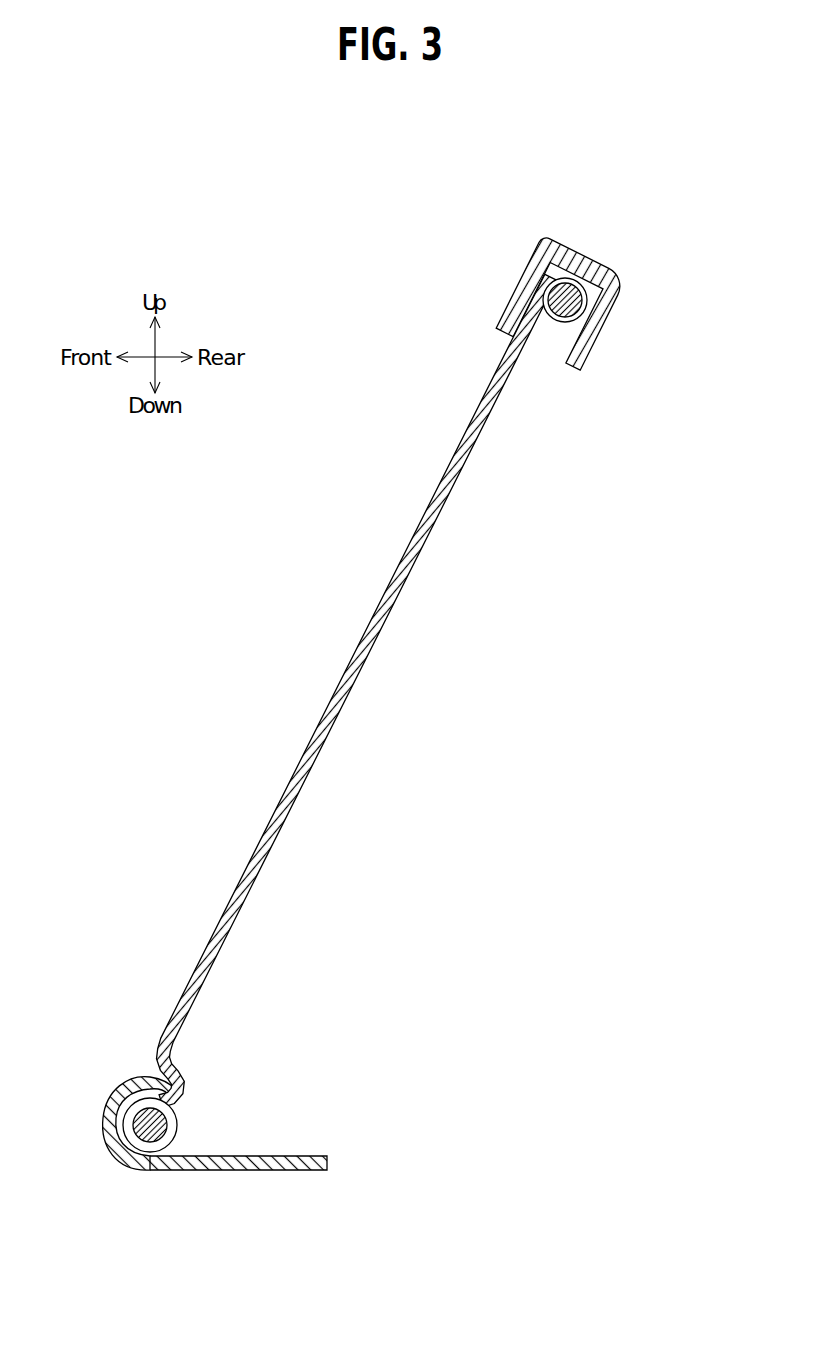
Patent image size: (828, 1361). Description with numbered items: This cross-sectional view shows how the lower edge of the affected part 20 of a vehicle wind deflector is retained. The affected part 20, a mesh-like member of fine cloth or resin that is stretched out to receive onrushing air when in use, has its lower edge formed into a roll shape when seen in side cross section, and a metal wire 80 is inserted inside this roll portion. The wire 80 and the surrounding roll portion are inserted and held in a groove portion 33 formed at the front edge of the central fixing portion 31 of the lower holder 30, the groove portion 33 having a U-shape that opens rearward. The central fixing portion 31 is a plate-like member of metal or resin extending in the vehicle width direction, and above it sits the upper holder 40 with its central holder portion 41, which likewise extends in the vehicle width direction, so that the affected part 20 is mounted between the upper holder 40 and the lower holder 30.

The affected part 20 is at (350, 661).
The upper holder 40 is at (599, 283).
The central holder portion 41 is at (593, 257).
The lower holder 30 is at (183, 1155).
The central fixing portion 31 is at (233, 1171).
The groove portion 33 is at (104, 1108).
The wire 80 is at (178, 1125).